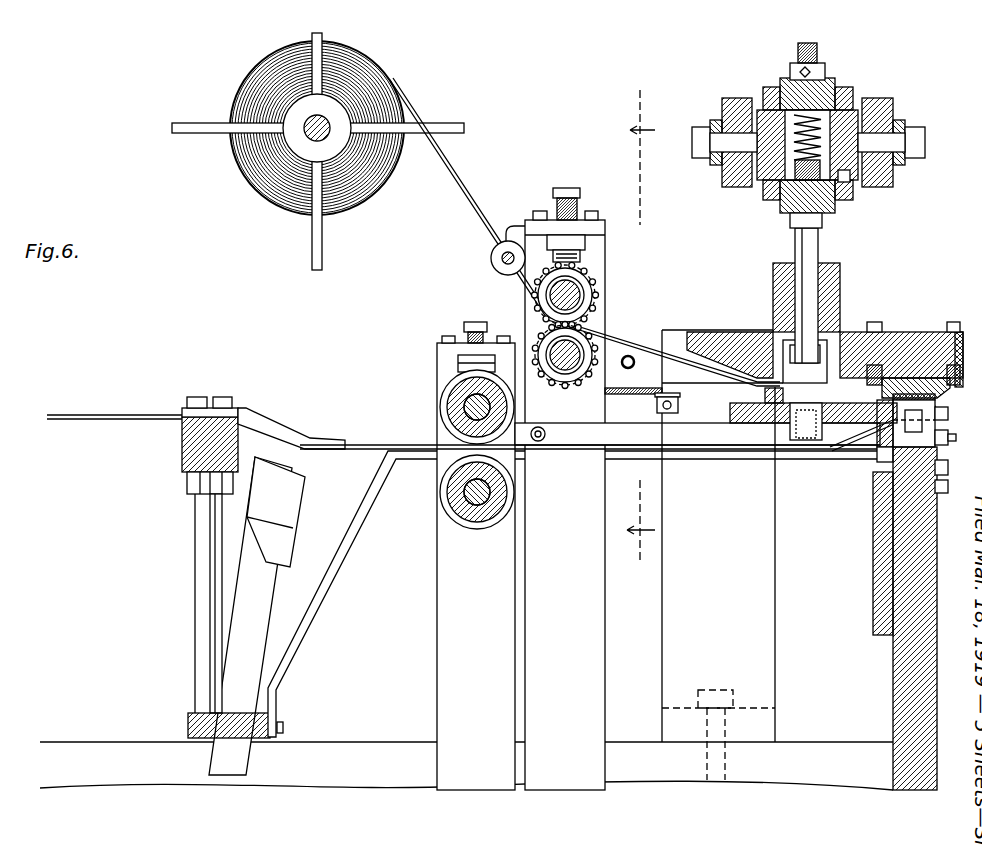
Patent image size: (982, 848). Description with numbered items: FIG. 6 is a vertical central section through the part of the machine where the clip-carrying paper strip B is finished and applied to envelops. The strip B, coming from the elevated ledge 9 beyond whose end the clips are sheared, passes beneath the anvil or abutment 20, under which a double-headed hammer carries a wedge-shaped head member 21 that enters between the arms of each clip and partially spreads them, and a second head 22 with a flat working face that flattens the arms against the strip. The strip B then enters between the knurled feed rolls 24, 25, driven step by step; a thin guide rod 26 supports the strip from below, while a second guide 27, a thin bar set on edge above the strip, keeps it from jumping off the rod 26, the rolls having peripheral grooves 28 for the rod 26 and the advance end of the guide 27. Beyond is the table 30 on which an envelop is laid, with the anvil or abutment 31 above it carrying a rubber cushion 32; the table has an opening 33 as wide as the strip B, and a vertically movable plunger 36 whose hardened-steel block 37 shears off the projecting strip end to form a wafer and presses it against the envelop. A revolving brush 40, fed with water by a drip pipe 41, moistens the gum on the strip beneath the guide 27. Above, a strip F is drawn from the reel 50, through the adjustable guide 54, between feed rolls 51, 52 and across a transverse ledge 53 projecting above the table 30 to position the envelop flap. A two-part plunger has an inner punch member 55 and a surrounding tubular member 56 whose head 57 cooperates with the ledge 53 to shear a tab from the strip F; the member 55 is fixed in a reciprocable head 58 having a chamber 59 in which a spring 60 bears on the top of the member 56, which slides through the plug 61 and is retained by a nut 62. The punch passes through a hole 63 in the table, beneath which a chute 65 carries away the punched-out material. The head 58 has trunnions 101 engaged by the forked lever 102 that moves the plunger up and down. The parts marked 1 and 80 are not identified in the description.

The floor 1 is at (350, 742).
The ledge 9 is at (651, 325).
The anvil or abutment 20 is at (284, 421).
The head member 21 is at (266, 504).
The second head 22 is at (284, 566).
The feed roll 24 is at (455, 408).
The feed roll 25 is at (452, 500).
The guide rod 26 is at (330, 567).
The guide 27 is at (583, 445).
The peripheral grooves 28 is at (452, 382).
The table 30 is at (888, 392).
The anvil or abutment 31 is at (918, 380).
The cushion 32 is at (936, 401).
The opening 33 is at (880, 426).
The plunger 36 is at (920, 562).
The block 37 is at (884, 492).
The revolving brush 40 is at (640, 372).
The drip pipe 41 is at (612, 356).
The strip-holding reel 50 is at (348, 103).
The feed roll 51 is at (582, 292).
The feed roll 52 is at (590, 338).
The transverse ledge 53 is at (765, 394).
The adjustable guide 54 is at (492, 260).
The inner member 55 is at (836, 92).
The tubular member 56 is at (818, 252).
The head or enlargement 57 is at (808, 346).
The head 58 is at (818, 146).
The chamber 59 is at (766, 172).
The spring 60 is at (880, 122).
The plug 61 is at (786, 206).
The nut 62 is at (848, 181).
The hole 63 is at (790, 428).
The chute 65 is at (808, 442).
The bracket 80 is at (657, 406).
The trunnions 101 is at (716, 148).
The forked lever 102 is at (735, 100).
The paper strip B is at (133, 414).
The strip F is at (452, 182).